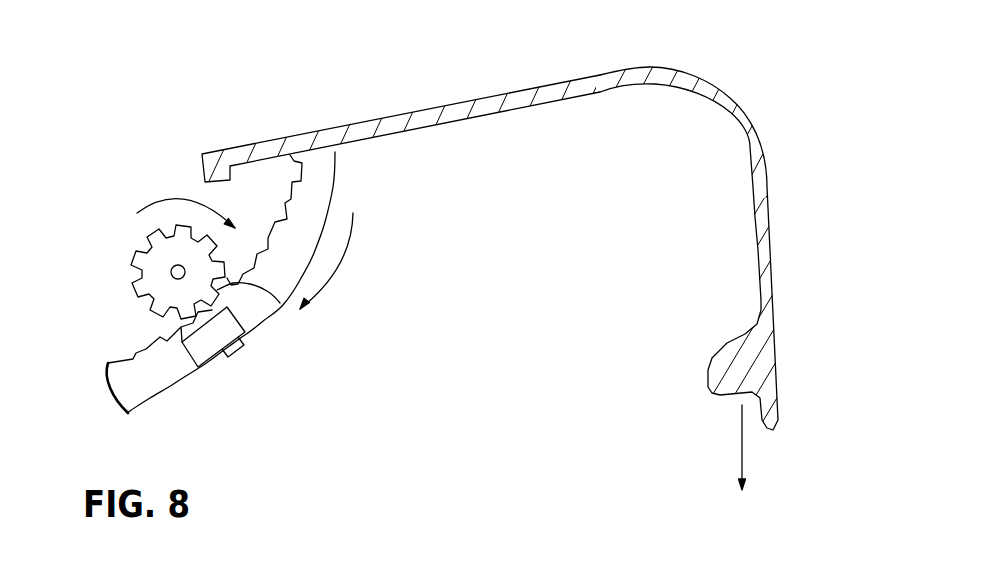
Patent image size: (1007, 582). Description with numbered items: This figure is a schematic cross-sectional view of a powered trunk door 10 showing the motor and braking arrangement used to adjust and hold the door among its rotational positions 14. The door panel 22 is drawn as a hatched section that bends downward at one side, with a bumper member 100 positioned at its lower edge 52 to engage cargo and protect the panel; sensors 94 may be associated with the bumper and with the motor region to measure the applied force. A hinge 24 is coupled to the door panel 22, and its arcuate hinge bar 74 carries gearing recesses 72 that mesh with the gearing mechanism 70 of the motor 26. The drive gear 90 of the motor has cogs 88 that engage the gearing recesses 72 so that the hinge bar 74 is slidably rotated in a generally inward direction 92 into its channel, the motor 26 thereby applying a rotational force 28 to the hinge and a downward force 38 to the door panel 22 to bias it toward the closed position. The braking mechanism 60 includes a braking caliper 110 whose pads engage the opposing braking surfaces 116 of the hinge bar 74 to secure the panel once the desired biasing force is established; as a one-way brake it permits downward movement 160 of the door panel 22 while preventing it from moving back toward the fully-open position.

The powered trunk door 10 is at (410, 88).
The rotational positions 14 is at (750, 88).
The door panel 22 is at (576, 80).
The hinge 24 is at (246, 384).
The motor 26 is at (152, 192).
The rotational force 28 is at (182, 199).
The downward force 38 is at (337, 258).
The lower edge 52 is at (777, 433).
The braking mechanism 60 is at (250, 343).
The gearing mechanism 70 is at (120, 275).
The gearing recesses 72 is at (135, 357).
The arcuate hinge bar 74 is at (140, 380).
The cogs 88 is at (280, 303).
The drive gear 90 is at (158, 292).
The inward direction 92 is at (338, 282).
The sensors 94 is at (170, 262).
The bumper member 100 is at (716, 394).
The braking caliper 110 is at (208, 350).
The braking surfaces 116 is at (310, 208).
The downward movement 160 is at (742, 442).